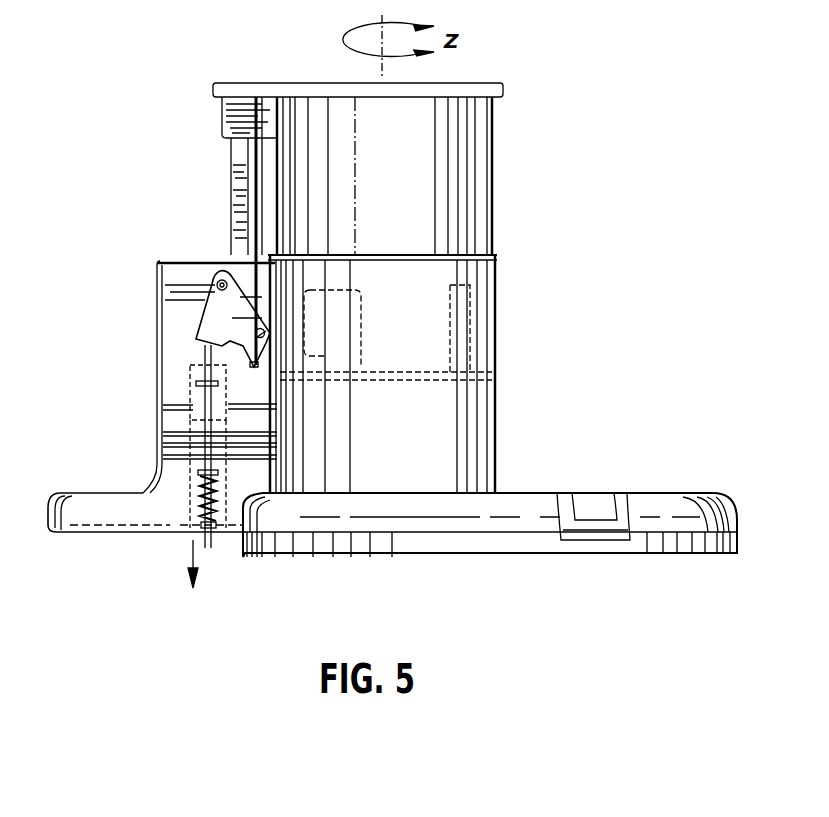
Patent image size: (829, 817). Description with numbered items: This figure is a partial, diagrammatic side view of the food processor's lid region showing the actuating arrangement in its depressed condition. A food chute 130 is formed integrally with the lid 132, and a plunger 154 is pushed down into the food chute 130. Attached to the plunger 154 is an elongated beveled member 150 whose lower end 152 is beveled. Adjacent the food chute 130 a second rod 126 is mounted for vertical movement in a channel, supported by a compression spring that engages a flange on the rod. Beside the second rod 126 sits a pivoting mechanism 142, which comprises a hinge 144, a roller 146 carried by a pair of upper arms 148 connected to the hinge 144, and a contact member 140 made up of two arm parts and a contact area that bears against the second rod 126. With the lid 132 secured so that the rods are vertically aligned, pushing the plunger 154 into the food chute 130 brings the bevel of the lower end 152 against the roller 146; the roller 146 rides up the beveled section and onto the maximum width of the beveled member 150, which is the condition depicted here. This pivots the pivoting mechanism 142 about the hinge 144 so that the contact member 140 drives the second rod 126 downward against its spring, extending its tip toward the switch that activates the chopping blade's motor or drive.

The second rod 126 is at (203, 433).
The food chute 130 is at (498, 413).
The lid 132 is at (637, 494).
The contact member 140 is at (157, 347).
The pivoting mechanism 142 is at (188, 327).
The hinge 144 is at (258, 336).
The roller 146 is at (222, 285).
The upper arms 148 is at (245, 258).
The elongated beveled member 150 is at (230, 160).
The lower end 152 is at (262, 333).
The plunger 154 is at (490, 133).